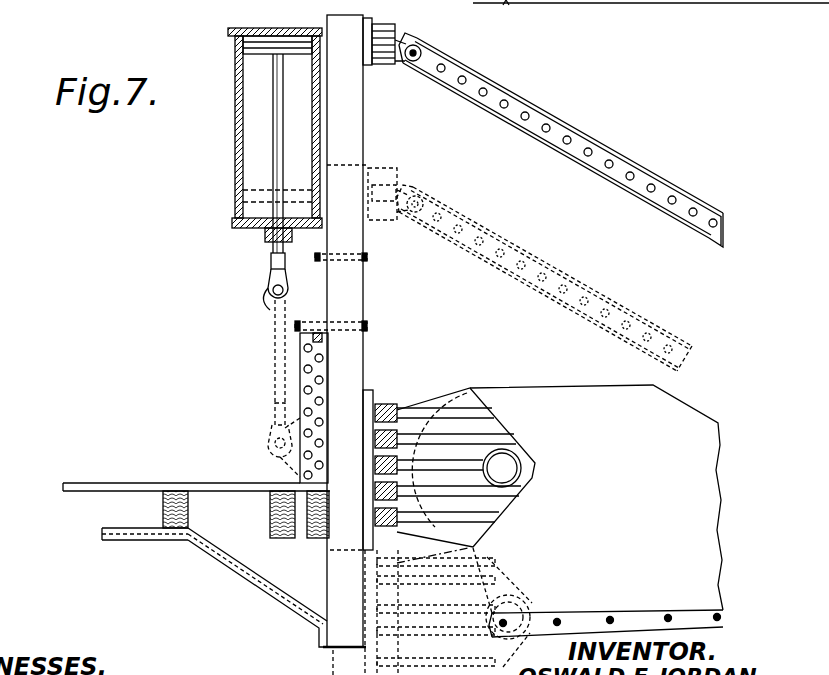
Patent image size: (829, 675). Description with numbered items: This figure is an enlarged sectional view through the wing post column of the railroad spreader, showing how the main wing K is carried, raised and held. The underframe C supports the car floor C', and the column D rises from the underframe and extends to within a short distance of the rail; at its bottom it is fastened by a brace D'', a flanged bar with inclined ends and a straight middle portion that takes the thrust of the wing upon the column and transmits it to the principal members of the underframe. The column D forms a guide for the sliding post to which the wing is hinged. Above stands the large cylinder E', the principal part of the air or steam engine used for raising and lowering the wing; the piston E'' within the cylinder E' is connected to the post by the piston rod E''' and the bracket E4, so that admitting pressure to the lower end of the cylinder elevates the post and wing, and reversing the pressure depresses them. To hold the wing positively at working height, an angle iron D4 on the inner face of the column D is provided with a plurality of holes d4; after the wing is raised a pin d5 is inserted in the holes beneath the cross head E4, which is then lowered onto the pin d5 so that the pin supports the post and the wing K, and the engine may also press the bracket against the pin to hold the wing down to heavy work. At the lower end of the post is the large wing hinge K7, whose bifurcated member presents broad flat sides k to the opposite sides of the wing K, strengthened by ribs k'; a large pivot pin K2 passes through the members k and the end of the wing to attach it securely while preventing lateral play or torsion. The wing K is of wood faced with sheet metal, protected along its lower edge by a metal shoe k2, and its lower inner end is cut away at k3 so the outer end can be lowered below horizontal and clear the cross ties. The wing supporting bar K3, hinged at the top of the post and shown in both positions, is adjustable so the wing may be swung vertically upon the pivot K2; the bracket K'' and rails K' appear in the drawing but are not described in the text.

The column D is at (345, 345).
The large cylinder E' is at (261, 128).
The piston E'' is at (257, 139).
The piston rod E''' is at (256, 153).
The bracket (cross head) E4 is at (315, 262).
The pin d5 is at (330, 331).
The angle iron D4 is at (302, 358).
The holes d4 is at (316, 358).
The car floor C' is at (196, 471).
The underframe C is at (186, 509).
The timber blocks C''' is at (299, 530).
The brace D'' is at (214, 587).
The pivot bracket for bar K'' is at (393, 111).
The wing supporting bar K3 is at (548, 114).
The wing hinge K7 is at (388, 401).
The broad flat sides of hinge member k is at (456, 475).
The bracket rails K' is at (445, 465).
The ribs k' is at (440, 460).
The pivot pin K2 is at (514, 465).
The main wing K is at (596, 497).
The cut-away portion k3 is at (467, 574).
The metal shoe k2 is at (643, 616).